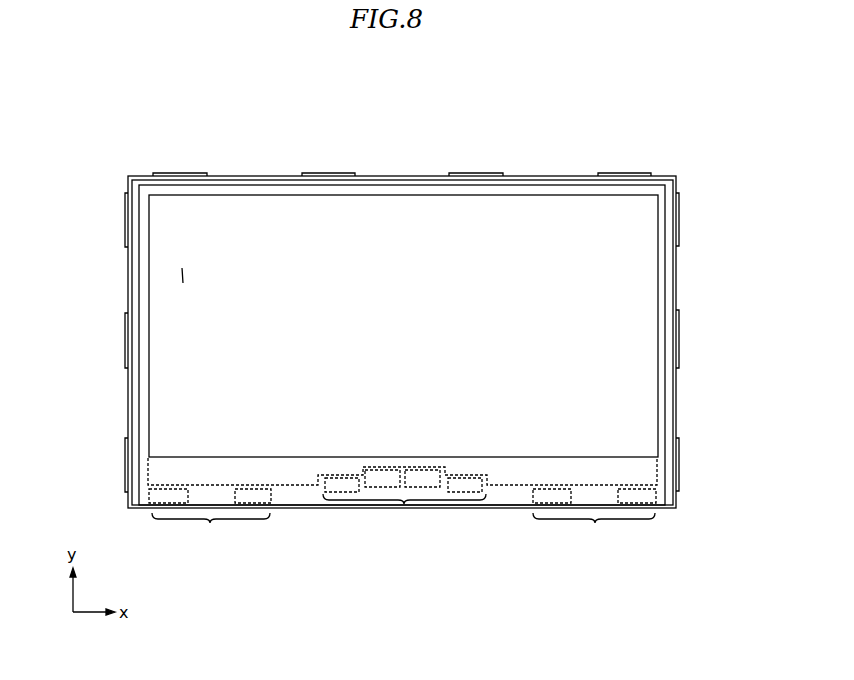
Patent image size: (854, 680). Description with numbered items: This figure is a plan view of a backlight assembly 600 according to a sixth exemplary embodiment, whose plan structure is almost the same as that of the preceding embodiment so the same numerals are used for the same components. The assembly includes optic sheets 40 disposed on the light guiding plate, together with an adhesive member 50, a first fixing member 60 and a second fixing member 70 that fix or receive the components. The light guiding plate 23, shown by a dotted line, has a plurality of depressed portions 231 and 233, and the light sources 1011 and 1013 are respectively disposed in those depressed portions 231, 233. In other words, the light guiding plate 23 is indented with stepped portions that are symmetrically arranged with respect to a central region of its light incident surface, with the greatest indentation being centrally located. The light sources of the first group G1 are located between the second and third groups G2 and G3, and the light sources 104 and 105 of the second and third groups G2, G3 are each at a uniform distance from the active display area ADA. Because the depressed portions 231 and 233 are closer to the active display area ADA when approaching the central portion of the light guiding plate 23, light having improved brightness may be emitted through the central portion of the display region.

The backlight assembly 600 is at (414, 144).
The optic sheets 40 is at (545, 218).
The adhesive member 50 is at (660, 277).
The first fixing member 60 is at (669, 258).
The second fixing member 70 is at (676, 298).
The active display area ADA is at (182, 276).
The light guiding plate 23 is at (283, 472).
The light sources 104 is at (157, 494).
The light sources 105 is at (553, 497).
The first group G1 is at (404, 511).
The second group G2 is at (211, 531).
The third group G3 is at (594, 531).
The light source 1011 is at (380, 480).
The light source 1013 is at (333, 486).
The depressed portion 231 is at (403, 482).
The depressed portion 233 is at (443, 484).